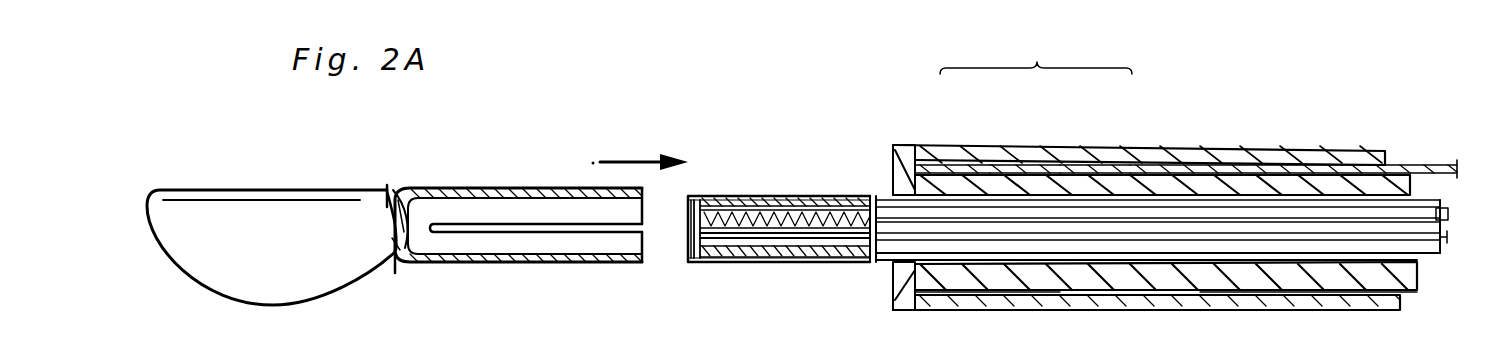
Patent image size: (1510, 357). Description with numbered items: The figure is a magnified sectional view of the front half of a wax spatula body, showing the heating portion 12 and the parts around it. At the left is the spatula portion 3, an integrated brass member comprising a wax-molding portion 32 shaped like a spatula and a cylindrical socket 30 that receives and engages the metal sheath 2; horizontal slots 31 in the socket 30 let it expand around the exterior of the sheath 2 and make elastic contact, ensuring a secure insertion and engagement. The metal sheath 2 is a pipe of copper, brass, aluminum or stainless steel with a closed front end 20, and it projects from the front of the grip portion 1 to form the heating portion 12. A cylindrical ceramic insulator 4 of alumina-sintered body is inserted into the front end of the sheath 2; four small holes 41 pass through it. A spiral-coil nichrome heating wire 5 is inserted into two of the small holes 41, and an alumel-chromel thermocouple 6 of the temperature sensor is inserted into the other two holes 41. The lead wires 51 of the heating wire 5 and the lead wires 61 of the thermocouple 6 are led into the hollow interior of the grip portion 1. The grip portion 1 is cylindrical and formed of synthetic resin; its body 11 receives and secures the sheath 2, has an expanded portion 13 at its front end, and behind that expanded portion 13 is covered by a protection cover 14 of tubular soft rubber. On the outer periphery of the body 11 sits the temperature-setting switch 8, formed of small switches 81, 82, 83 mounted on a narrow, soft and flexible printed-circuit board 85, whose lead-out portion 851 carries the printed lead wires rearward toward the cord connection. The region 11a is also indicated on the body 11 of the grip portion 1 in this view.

The grip portion 1 is at (1302, 278).
The metal sheath 2 is at (748, 197).
The spatula portion 3 is at (325, 190).
The ceramic insulator 4 is at (808, 262).
The heating wire 5 is at (712, 200).
The thermocouple 6 is at (715, 262).
The temperature-setting switch 8 is at (1023, 101).
The body 11 is at (1132, 275).
The sheath end portion 11a is at (970, 282).
The heating portion 12 is at (835, 197).
The expanded portion 13 is at (897, 145).
The protection cover 14 is at (1252, 150).
The closed front end 20 is at (685, 238).
The cylindrical socket 30 is at (485, 188).
The slots 31 is at (505, 234).
The wax-molding portion 32 is at (230, 215).
The small holes 41 is at (790, 215).
The lead wires of the heating wire 51 is at (1442, 208).
The lead wires of the thermocouple 61 is at (1052, 240).
The first layer 81 is at (950, 168).
The second layer 82 is at (1020, 168).
The third layer 83 is at (1080, 172).
The printed-circuit board 85 is at (1125, 168).
The lead-out portion 851 is at (1428, 165).